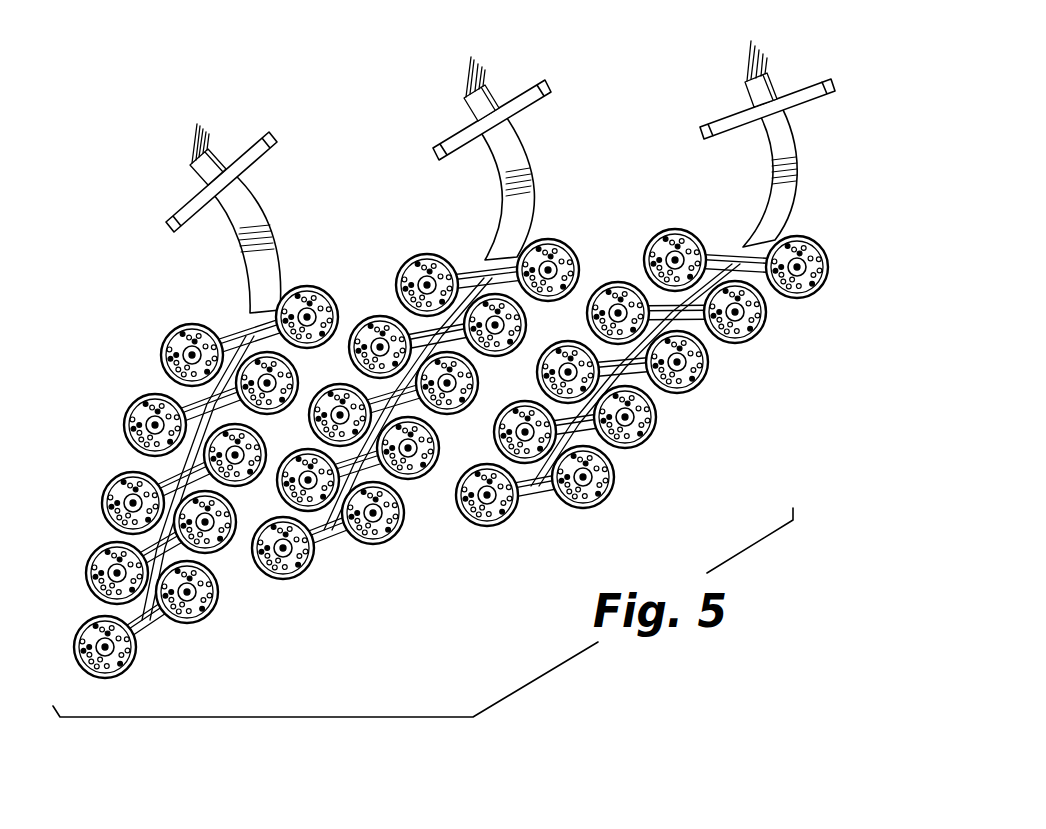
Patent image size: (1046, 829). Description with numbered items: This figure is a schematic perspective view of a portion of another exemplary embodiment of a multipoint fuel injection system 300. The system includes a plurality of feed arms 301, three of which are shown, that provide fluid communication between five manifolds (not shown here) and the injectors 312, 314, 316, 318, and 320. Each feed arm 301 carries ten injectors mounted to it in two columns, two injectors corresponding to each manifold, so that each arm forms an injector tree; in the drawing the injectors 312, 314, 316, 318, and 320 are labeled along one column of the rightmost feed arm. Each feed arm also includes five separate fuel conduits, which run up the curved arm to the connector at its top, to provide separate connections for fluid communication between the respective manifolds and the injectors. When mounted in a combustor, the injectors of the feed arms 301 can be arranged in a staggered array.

The multipoint fuel injection system 300 is at (423, 612).
The feed arm 301 is at (469, 340).
The injector 312 is at (810, 297).
The injector 314 is at (753, 338).
The injector 316 is at (700, 383).
The injector 318 is at (653, 433).
The injector 320 is at (606, 498).